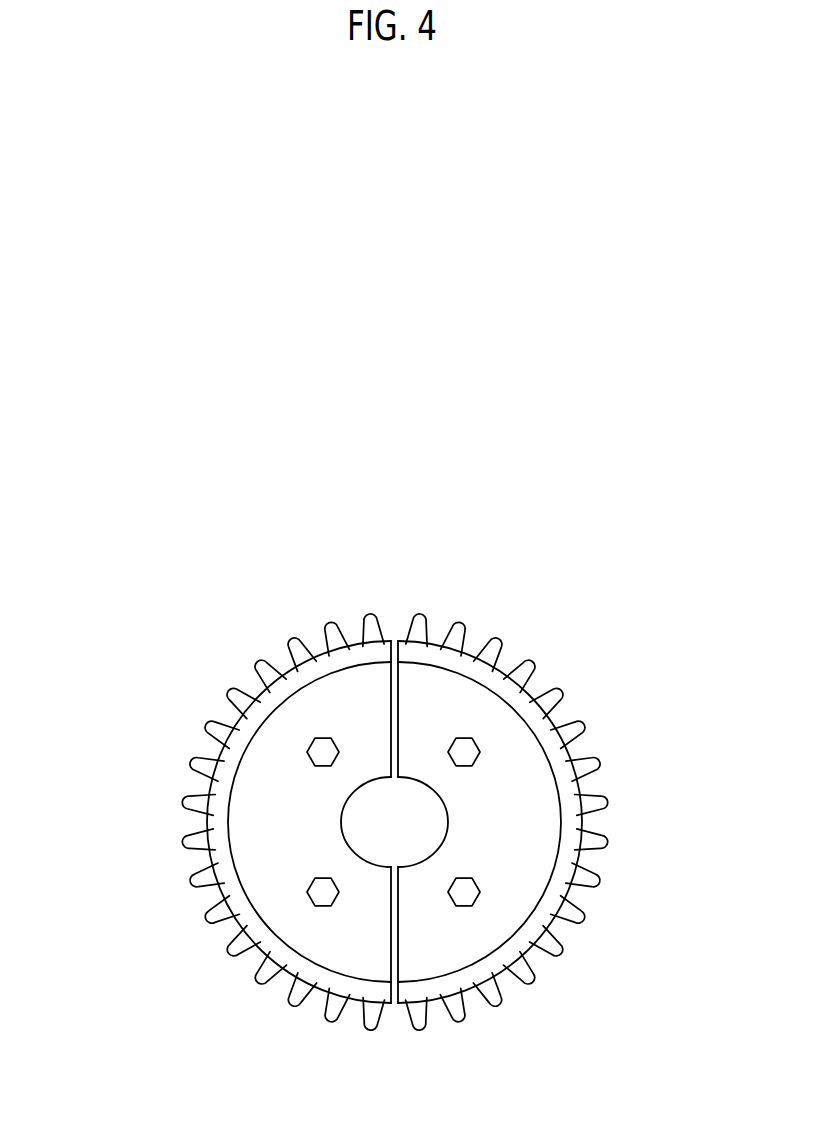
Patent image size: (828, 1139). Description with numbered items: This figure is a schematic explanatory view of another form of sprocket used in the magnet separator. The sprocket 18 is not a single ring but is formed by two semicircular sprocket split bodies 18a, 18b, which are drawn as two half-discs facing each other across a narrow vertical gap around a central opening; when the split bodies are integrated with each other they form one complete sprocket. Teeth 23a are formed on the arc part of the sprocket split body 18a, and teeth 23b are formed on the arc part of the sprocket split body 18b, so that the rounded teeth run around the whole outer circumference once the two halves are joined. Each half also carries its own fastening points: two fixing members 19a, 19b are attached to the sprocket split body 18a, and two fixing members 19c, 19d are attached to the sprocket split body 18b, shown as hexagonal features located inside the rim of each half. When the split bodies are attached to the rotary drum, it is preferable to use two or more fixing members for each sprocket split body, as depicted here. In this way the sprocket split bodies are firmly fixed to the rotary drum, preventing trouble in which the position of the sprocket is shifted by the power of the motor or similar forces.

The sprocket 18 is at (560, 370).
The sprocket split body 18a is at (457, 690).
The sprocket split body 18b is at (316, 705).
The fixing member 19a is at (483, 758).
The fixing member 19b is at (482, 902).
The fixing member 19c is at (323, 902).
The fixing member 19d is at (297, 740).
The teeth 23a is at (588, 713).
The teeth 23b is at (173, 850).